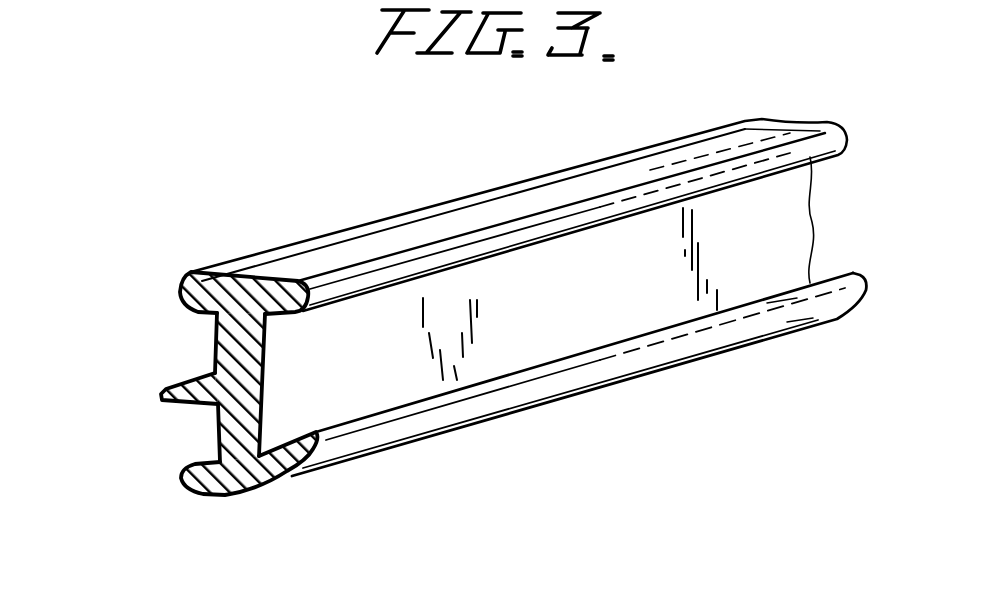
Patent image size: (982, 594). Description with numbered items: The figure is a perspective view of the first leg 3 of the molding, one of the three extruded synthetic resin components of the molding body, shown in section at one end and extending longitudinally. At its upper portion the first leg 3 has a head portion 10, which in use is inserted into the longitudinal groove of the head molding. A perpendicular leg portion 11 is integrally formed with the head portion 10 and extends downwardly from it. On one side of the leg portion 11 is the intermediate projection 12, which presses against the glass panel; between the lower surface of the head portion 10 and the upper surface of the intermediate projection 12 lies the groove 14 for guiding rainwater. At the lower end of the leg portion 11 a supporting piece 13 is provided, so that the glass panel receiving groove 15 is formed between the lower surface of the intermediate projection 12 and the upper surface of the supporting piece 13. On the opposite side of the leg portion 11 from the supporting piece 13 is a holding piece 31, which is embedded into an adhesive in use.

The first leg 3 is at (712, 130).
The head portion 10 is at (257, 282).
The leg portion 11 is at (263, 371).
The intermediate projection 12 is at (167, 390).
The supporting piece 13 is at (187, 490).
The rainwater guiding groove 14 is at (204, 347).
The glass panel receiving groove 15 is at (204, 432).
The holding piece 31 is at (297, 470).